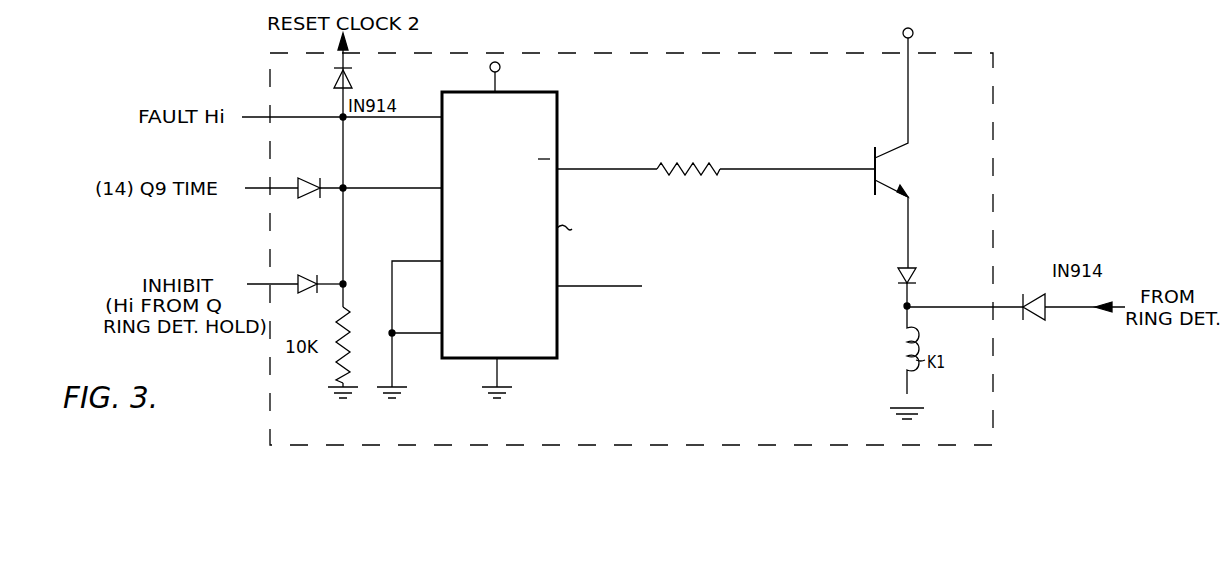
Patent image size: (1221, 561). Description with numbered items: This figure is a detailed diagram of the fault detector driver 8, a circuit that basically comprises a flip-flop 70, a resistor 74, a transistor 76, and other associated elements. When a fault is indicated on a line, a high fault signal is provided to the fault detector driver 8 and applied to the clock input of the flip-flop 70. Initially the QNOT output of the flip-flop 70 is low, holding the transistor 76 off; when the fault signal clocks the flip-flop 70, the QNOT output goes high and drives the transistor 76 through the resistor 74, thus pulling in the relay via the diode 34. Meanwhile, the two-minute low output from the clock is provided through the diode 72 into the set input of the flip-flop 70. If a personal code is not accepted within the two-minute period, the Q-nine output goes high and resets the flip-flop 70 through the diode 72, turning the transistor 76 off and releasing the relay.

The fault detector K1 driver 8 is at (606, 56).
The flip-flop 70 is at (559, 113).
The diode 72 is at (305, 199).
The resistor 74 is at (715, 168).
The transistor 76 is at (902, 153).
The diode 34 is at (913, 268).